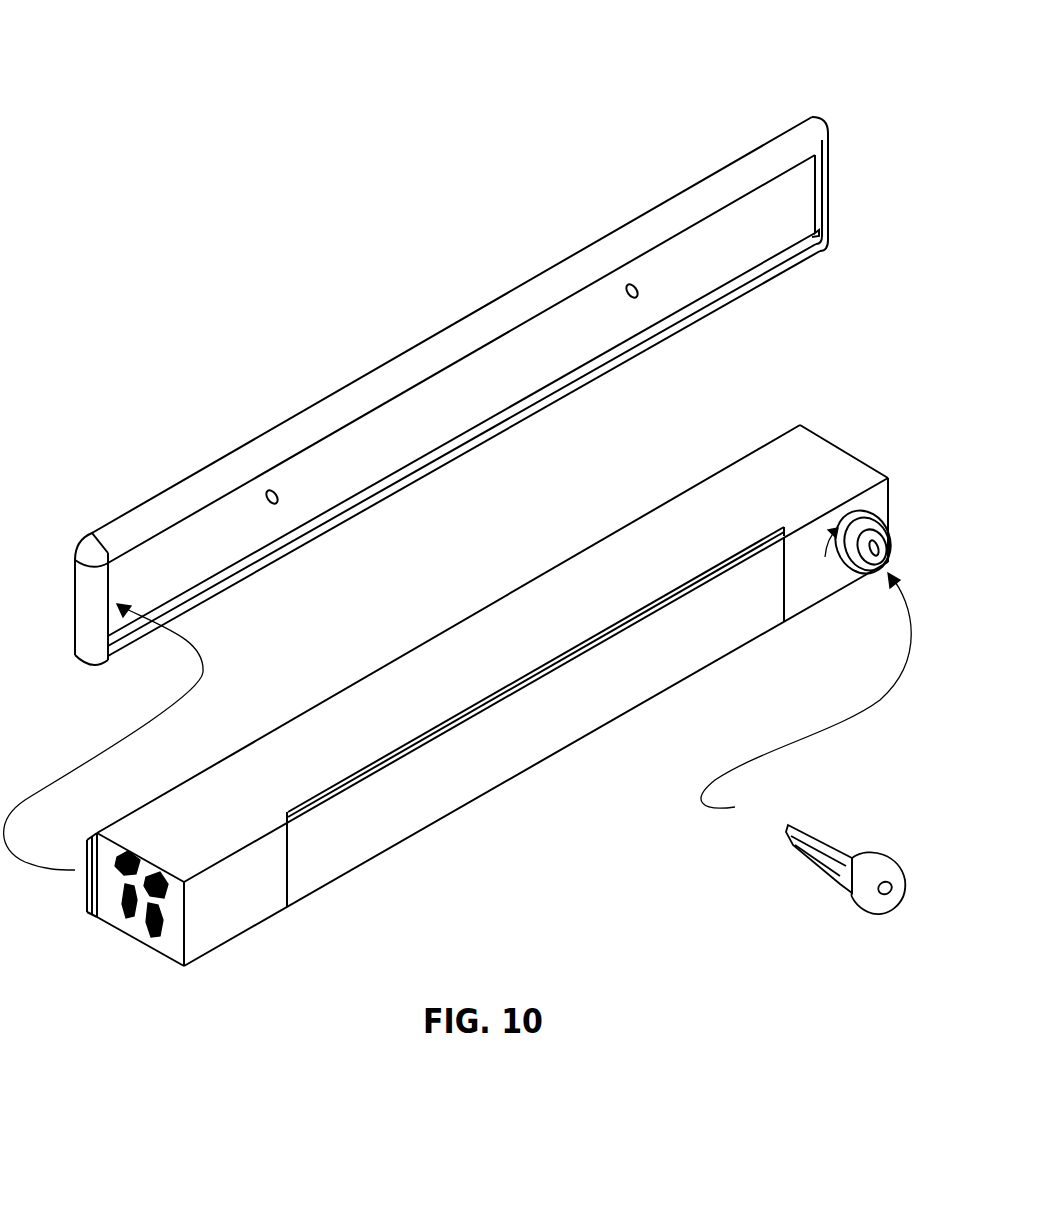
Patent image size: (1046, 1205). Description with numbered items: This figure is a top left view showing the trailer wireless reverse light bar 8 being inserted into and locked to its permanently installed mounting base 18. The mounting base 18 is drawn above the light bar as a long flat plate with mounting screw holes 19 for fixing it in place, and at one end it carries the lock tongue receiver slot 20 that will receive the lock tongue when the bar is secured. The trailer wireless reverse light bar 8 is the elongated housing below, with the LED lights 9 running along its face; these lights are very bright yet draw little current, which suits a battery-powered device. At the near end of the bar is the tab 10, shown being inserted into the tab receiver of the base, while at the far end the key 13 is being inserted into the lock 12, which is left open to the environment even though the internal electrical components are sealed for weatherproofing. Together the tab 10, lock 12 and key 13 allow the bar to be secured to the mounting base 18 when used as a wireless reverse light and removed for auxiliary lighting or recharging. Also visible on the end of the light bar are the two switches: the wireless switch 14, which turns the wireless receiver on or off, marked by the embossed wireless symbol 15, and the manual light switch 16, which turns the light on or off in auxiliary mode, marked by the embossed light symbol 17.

The trailer wireless reverse light bar 8 is at (530, 578).
The LED lights 9 is at (543, 762).
The tab 10 is at (87, 880).
The lock 12 is at (858, 512).
The key 13 is at (835, 885).
The wireless switch 14 is at (115, 928).
The embossed wireless symbol 15 is at (132, 862).
The manual light switch 16 is at (140, 927).
The embossed light symbol 17 is at (162, 868).
The mounting base 18 is at (430, 332).
The mounting screw holes 19 is at (628, 286).
The lock tongue receiver slot 20 is at (805, 178).